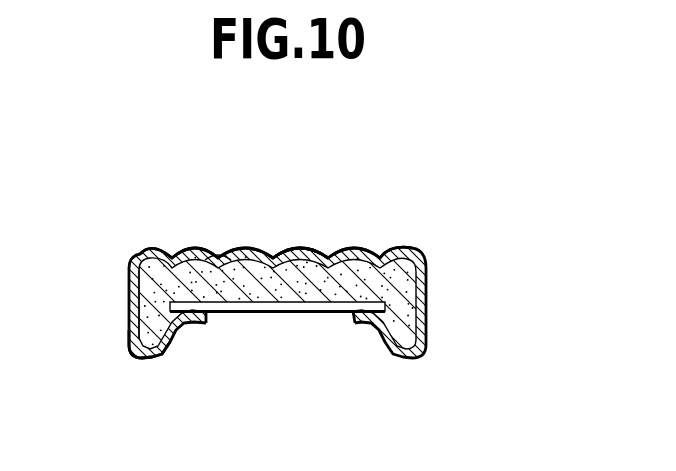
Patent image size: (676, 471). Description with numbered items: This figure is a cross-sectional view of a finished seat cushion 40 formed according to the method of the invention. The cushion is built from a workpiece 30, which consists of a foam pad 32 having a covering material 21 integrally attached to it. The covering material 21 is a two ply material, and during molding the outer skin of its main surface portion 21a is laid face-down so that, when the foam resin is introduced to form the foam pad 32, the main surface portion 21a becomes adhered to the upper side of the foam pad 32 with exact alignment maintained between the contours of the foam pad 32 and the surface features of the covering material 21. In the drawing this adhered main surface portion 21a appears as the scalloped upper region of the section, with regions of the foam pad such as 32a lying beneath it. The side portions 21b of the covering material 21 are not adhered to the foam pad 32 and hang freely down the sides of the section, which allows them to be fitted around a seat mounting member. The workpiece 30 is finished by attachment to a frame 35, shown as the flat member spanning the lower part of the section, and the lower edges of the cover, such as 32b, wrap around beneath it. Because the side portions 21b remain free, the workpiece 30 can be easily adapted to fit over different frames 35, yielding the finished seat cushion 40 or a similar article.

The finished seat cushion 40 is at (70, 161).
The workpiece 30 is at (151, 247).
The covering material 21 is at (362, 247).
The main surface portion 21a is at (218, 257).
The side portions 21b is at (130, 281).
The foam pad 32 is at (402, 295).
The raised portion of cover member 32a is at (304, 247).
The hooked lower edge of cover member 32b is at (146, 329).
The frame 35 is at (284, 308).